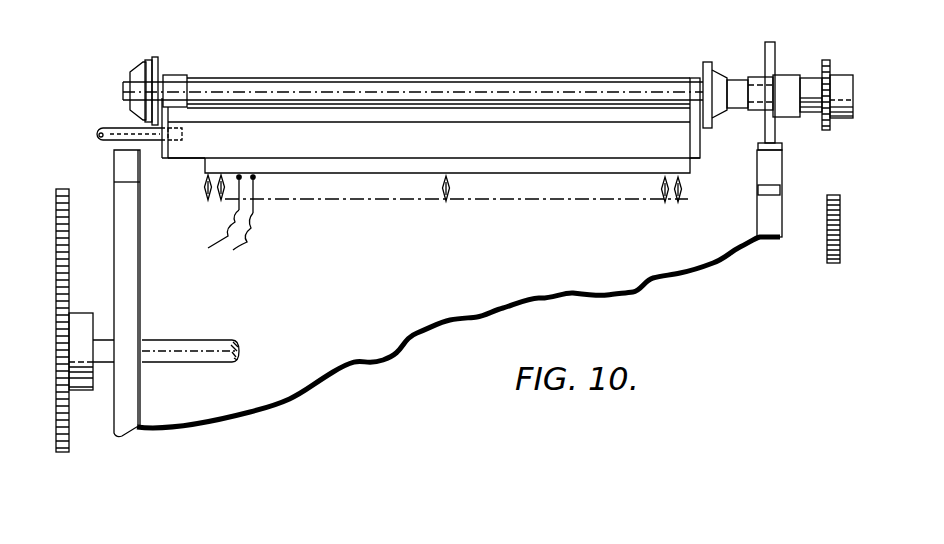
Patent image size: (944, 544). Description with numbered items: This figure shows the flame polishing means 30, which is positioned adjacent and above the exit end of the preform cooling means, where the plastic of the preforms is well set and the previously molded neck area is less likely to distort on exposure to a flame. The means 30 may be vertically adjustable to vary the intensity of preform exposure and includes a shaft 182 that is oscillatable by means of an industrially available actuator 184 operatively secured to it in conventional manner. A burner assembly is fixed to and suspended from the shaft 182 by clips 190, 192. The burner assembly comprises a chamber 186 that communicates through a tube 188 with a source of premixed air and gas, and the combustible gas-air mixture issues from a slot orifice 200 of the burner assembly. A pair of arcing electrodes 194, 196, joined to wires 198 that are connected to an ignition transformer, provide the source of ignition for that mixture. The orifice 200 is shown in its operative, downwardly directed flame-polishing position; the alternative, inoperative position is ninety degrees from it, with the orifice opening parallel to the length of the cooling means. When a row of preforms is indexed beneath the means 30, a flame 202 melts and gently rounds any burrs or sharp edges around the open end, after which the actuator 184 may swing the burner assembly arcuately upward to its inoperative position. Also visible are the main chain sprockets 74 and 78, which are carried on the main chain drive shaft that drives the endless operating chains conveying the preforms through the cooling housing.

The flame polishing means 30 is at (336, 43).
The main chain sprocket 74 is at (827, 258).
The main chain sprocket 78 is at (68, 208).
The shaft 182 is at (505, 92).
The actuator 184 is at (842, 75).
The chamber 186 is at (475, 148).
The tube 188 is at (112, 128).
The clip 190 is at (170, 112).
The clip 192 is at (688, 115).
The arcing electrode 194 is at (238, 209).
The arcing electrode 196 is at (255, 207).
The wires 198 is at (247, 238).
The slot orifice 200 is at (367, 174).
The flame 202 is at (670, 203).